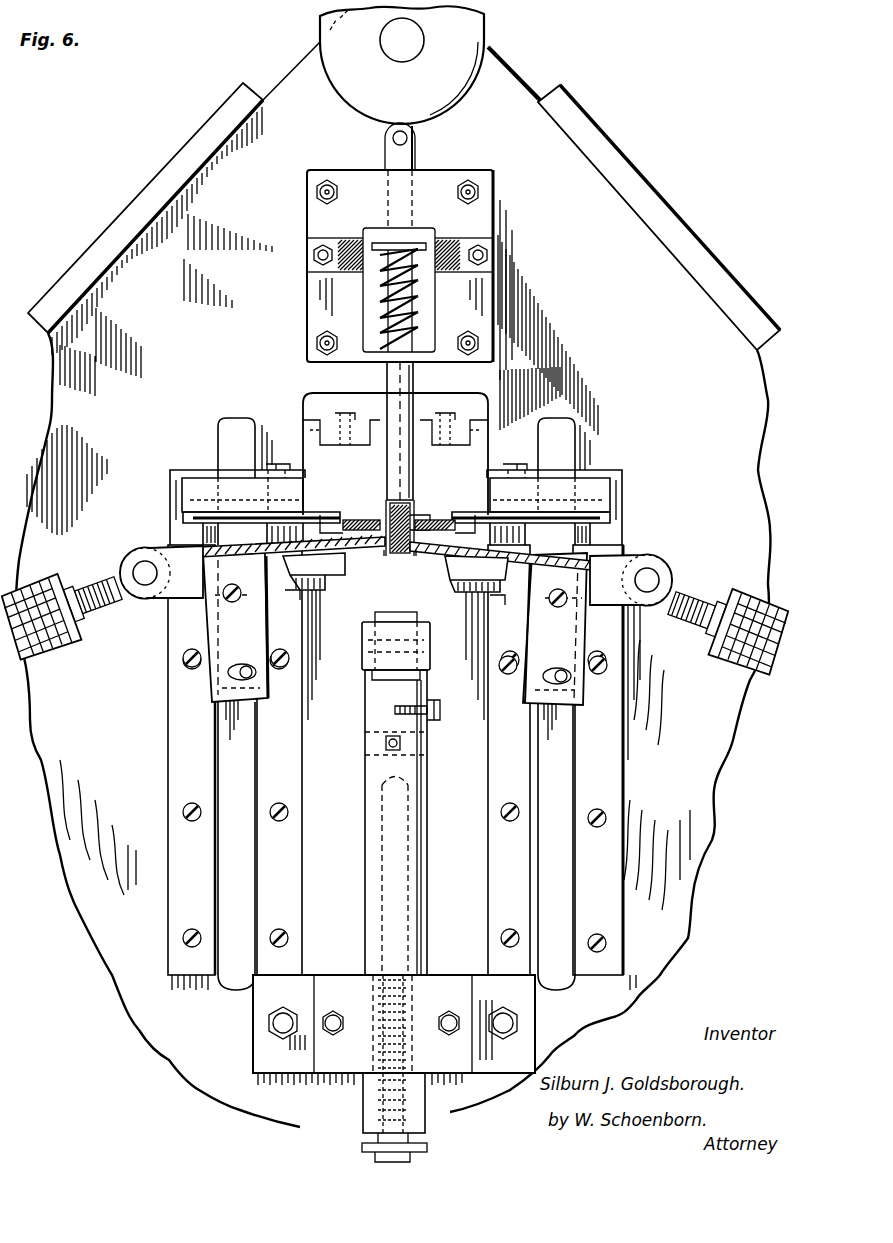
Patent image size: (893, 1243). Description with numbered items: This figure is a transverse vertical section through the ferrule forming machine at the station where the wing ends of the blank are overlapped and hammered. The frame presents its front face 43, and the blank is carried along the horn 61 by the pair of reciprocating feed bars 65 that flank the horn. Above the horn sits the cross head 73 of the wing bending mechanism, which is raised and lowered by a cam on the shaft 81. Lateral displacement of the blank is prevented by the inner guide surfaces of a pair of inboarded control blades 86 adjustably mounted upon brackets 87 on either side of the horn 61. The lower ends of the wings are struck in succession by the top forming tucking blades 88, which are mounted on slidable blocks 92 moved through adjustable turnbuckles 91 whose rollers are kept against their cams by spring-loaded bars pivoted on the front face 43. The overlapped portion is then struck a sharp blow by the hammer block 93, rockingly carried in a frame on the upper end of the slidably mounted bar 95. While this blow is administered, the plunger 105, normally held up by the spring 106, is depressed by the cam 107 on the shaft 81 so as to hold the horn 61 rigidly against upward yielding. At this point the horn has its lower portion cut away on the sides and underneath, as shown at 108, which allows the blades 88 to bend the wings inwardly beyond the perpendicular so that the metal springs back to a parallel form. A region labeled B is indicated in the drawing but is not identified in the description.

The front face 43 is at (393, 617).
The horn 61 is at (408, 500).
The feed bars 65 is at (362, 519).
The cross head 73 is at (465, 428).
The shaft 81 is at (402, 40).
The control blades 86 is at (382, 556).
The brackets 87 is at (395, 629).
The tucking blades 88 is at (346, 576).
The turnbuckles 91 is at (78, 588).
The slidable blocks 92 is at (473, 604).
The hammer block 93 is at (395, 615).
The bar 95 is at (380, 856).
The plunger 105 is at (385, 467).
The spring 106 is at (418, 316).
The cam 107 is at (402, 65).
The cut away portion 108 is at (400, 556).
The bearing B is at (412, 512).